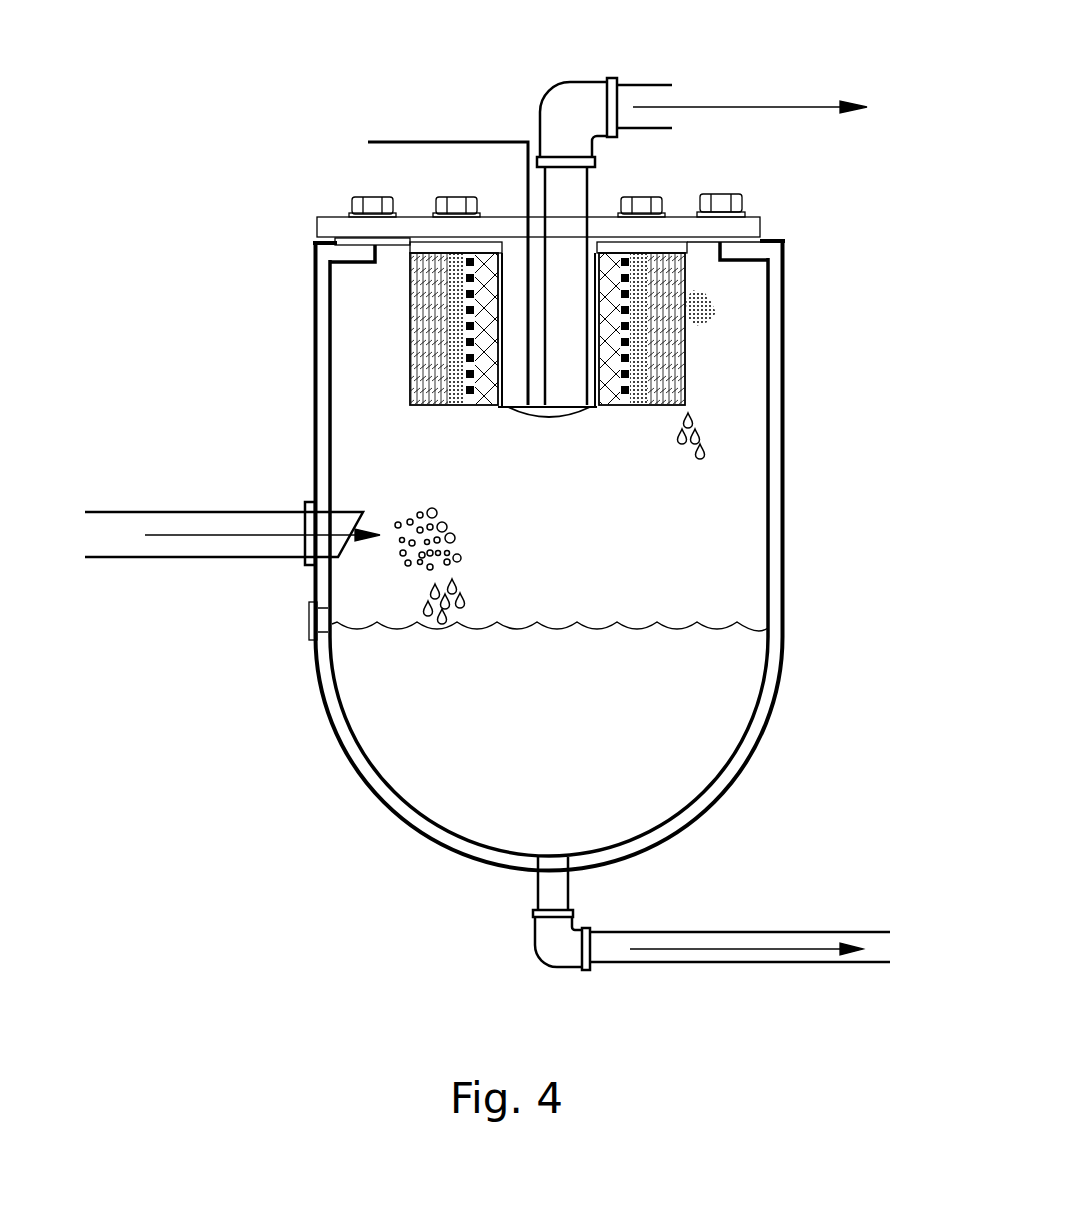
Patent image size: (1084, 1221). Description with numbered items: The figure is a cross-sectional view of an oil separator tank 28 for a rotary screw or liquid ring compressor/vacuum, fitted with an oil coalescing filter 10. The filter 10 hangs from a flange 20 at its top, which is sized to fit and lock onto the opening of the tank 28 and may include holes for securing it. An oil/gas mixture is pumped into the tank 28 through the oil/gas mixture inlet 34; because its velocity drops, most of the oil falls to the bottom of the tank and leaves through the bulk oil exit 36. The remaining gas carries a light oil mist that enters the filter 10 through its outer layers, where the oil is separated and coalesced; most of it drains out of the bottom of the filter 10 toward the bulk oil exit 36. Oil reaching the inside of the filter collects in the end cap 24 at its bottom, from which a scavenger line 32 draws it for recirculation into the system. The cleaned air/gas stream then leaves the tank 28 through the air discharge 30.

The oil separator tank 28 is at (388, 77).
The flange 20 is at (390, 238).
The scavenger line 32 is at (418, 142).
The air discharge 30 is at (645, 84).
The oil coalescing filter 10 is at (407, 345).
The end cap 24 is at (550, 410).
The oil/gas mixture inlet 34 is at (165, 511).
The bulk oil exit 36 is at (700, 957).